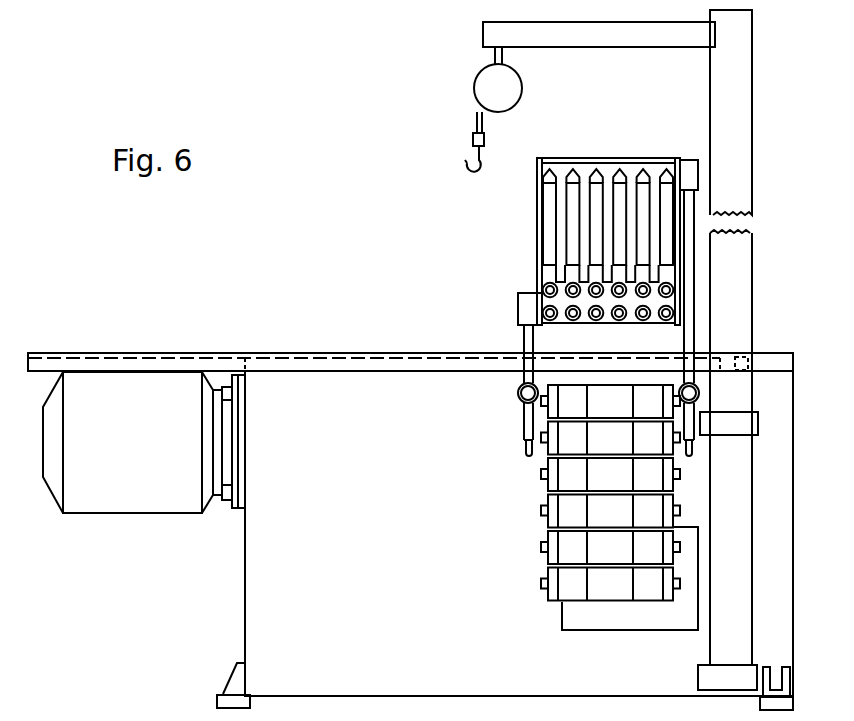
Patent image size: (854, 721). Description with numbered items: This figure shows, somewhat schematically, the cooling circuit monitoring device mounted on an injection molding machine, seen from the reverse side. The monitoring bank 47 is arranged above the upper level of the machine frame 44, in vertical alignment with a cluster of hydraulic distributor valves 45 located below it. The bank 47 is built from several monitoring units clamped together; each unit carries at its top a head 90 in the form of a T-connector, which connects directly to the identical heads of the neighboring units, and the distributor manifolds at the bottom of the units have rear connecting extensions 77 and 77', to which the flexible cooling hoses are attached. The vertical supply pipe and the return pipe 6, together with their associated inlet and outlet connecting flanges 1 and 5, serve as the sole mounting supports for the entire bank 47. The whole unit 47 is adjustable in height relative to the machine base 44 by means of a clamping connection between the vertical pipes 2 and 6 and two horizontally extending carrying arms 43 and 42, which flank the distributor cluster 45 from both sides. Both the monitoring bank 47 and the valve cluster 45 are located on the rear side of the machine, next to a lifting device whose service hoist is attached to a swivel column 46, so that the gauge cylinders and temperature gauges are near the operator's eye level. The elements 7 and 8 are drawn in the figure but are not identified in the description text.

The inlet connecting flange 1 is at (530, 306).
The vertical pipe 2 is at (528, 343).
The outlet connecting flange 5 is at (686, 172).
The return pipe 6 is at (688, 250).
The suction tube 7 is at (556, 296).
The pipette/spindle 8 is at (573, 240).
The carrying arm 42 is at (700, 393).
The carrying arm 43 is at (519, 397).
The machine frame 44 is at (311, 380).
The cluster of hydraulic distributor valves 45 is at (600, 508).
The swivel column 46 is at (735, 137).
The monitoring bank 47 is at (641, 193).
The connecting extension 77 is at (680, 272).
The rear connecting extension 77' is at (668, 301).
The head 90 is at (628, 178).